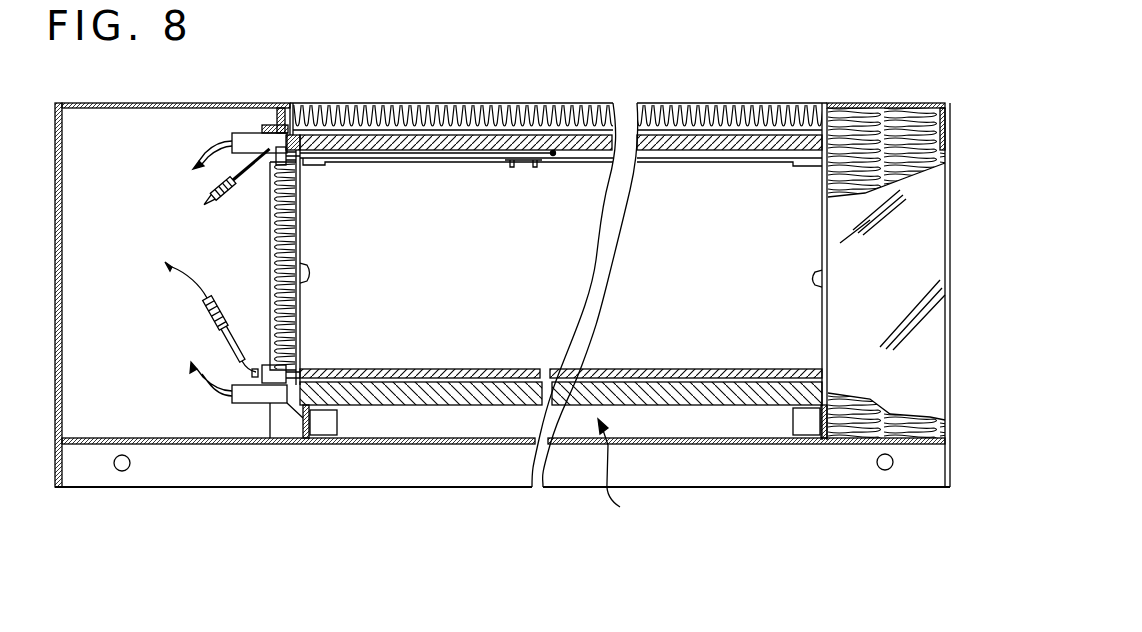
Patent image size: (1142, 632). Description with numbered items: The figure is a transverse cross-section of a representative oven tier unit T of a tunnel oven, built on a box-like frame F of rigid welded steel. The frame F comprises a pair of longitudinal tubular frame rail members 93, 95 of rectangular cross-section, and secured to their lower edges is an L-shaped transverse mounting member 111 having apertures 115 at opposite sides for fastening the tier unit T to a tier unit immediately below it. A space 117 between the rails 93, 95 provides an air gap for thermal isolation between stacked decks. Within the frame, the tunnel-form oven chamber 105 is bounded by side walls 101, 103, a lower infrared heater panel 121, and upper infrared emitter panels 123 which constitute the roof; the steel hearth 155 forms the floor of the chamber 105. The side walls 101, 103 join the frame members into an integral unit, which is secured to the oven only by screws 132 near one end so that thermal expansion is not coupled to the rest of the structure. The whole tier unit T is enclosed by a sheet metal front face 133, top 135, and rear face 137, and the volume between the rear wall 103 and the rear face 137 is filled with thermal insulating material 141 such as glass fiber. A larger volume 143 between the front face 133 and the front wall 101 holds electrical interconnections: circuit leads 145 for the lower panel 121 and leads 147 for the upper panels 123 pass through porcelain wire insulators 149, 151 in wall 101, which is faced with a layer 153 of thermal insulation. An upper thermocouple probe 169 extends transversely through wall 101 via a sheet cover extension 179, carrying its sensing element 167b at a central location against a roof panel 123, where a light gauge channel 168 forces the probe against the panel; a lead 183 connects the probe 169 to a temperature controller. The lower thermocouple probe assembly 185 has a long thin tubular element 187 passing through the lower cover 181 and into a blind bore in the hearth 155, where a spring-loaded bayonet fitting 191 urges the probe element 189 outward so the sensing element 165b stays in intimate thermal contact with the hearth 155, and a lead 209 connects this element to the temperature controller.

The front face 133 is at (57, 104).
The volume 143 is at (123, 127).
The circuit leads 147 is at (203, 155).
The porcelain wire insulator 149 is at (250, 134).
The lead 183 is at (207, 187).
The sheet cover extension 179 is at (267, 214).
The layer of thermal insulation 153 is at (270, 250).
The cover 181 is at (270, 323).
The lead 209 is at (192, 287).
The spring-loaded bayonet fitting 191 is at (262, 367).
The circuit leads 145 is at (207, 382).
The porcelain wire insulator 151 is at (247, 404).
The apertures 115 is at (128, 471).
The frame F is at (313, 445).
The longitudinal tubular frame rail member 93 is at (337, 418).
The L-shaped transverse mounting member 111 is at (443, 468).
The space 117 is at (628, 472).
The longitudinal tubular frame rail member 95 is at (793, 420).
The top 135 is at (540, 103).
The light gauge channel 168 is at (510, 165).
The thermocouple probe 169 is at (407, 158).
The thermocouple temperature sensing element 167b is at (543, 165).
The infrared emitter panel 123 is at (582, 143).
The oven chamber 105 is at (683, 185).
The thermal insulating material 141 is at (847, 137).
The oven tier unit T is at (893, 102).
The rear face 137 is at (943, 140).
The side wall 101 is at (305, 263).
The screws 132 is at (313, 283).
The side wall 103 is at (818, 265).
The hearth 155 is at (648, 371).
The tubular element 187 is at (336, 372).
The probe element 189 is at (390, 372).
The lower thermocouple probe assembly 185 is at (440, 383).
The thermocouple temperature sensing element 165b is at (528, 375).
The heater panel 121 is at (438, 393).